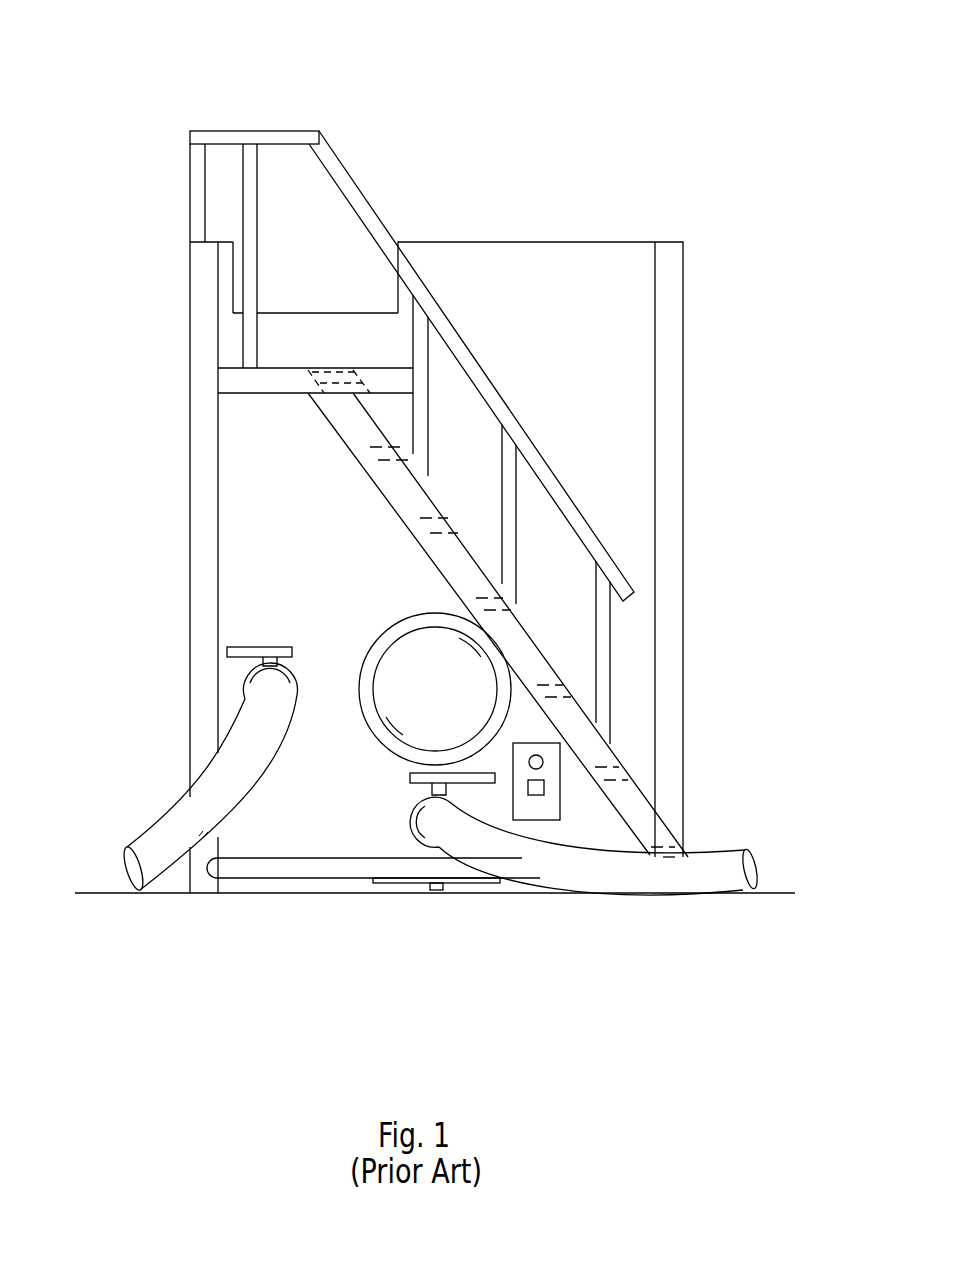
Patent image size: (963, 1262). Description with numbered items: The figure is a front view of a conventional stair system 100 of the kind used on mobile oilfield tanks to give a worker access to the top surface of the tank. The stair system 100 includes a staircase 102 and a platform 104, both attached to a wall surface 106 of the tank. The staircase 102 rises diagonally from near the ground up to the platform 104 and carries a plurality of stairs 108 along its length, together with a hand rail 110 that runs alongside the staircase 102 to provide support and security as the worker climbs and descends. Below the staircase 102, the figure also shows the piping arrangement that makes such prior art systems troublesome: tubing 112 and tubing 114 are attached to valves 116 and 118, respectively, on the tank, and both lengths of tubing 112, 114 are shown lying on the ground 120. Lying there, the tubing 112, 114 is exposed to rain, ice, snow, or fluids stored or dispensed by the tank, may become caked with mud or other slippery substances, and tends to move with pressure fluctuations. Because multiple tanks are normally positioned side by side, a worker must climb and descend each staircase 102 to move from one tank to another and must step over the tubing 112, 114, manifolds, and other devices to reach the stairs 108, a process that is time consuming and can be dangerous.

The conventional stair system 100 is at (188, 118).
The staircase 102 is at (407, 512).
The platform 104 is at (258, 397).
The wall surface 106 is at (586, 325).
The stairs 108 is at (622, 765).
The hand rail 110 is at (572, 500).
The tubing 112 is at (729, 849).
The tubing 114 is at (167, 813).
The valve 116 is at (420, 800).
The valve 118 is at (243, 690).
The ground 120 is at (312, 895).